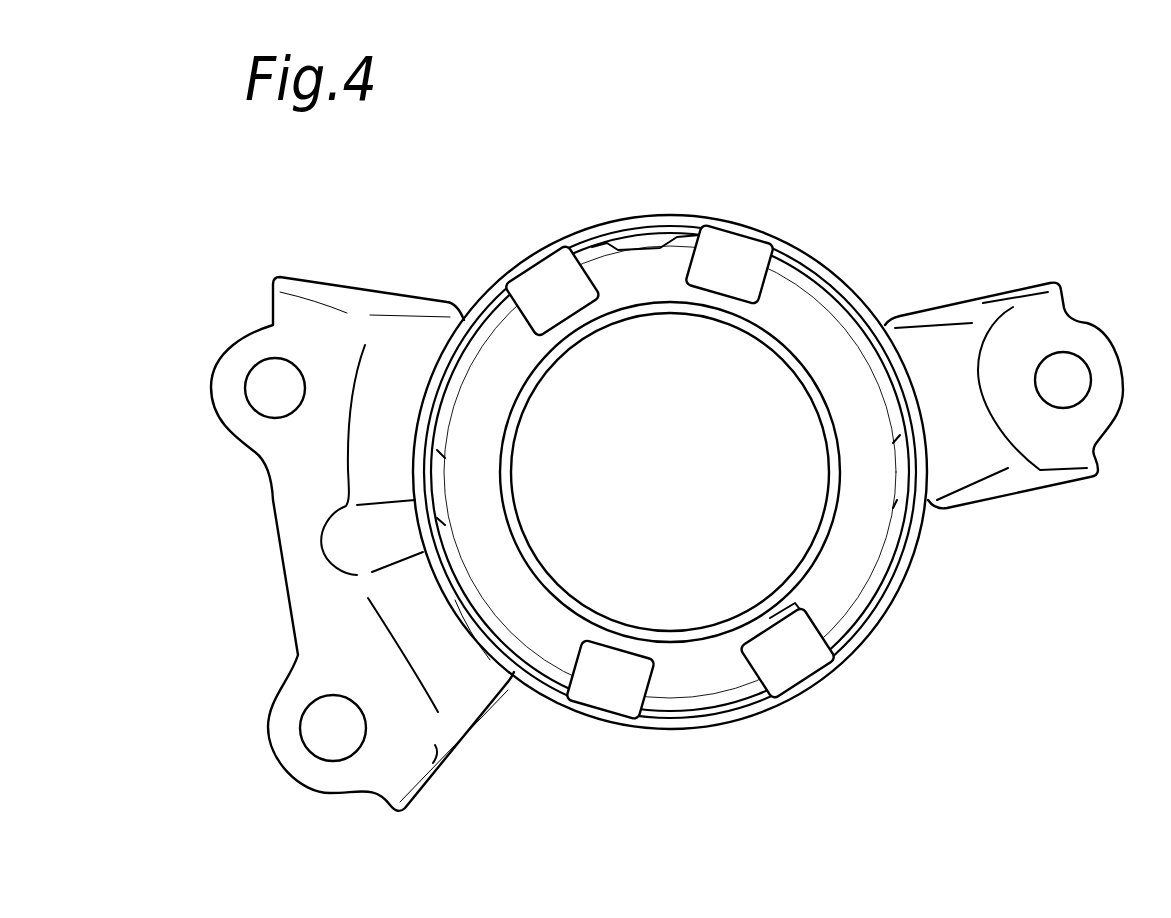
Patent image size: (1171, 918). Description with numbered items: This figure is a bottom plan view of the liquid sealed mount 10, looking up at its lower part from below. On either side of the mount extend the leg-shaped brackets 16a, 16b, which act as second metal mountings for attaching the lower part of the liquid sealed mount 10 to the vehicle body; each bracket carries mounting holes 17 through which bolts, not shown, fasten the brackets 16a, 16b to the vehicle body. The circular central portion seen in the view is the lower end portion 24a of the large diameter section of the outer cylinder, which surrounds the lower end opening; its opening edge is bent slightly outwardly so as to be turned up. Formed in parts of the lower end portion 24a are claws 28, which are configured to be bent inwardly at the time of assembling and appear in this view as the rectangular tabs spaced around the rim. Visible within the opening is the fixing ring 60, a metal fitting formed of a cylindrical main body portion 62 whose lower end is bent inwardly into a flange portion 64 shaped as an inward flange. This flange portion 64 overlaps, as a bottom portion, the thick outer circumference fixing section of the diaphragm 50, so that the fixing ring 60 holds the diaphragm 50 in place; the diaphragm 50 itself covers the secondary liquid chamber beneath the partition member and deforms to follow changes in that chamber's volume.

The liquid sealed mount 10 is at (725, 498).
The bracket 16a is at (293, 552).
The bracket 16b is at (1005, 473).
The mounting holes 17 is at (268, 375).
The lower end portion 24a is at (457, 602).
The claw 28 is at (543, 288).
The diaphragm 50 is at (801, 548).
The fixing ring 60 is at (878, 538).
The cylindrical main body portion 62 is at (840, 290).
The flange portion 64 is at (822, 330).